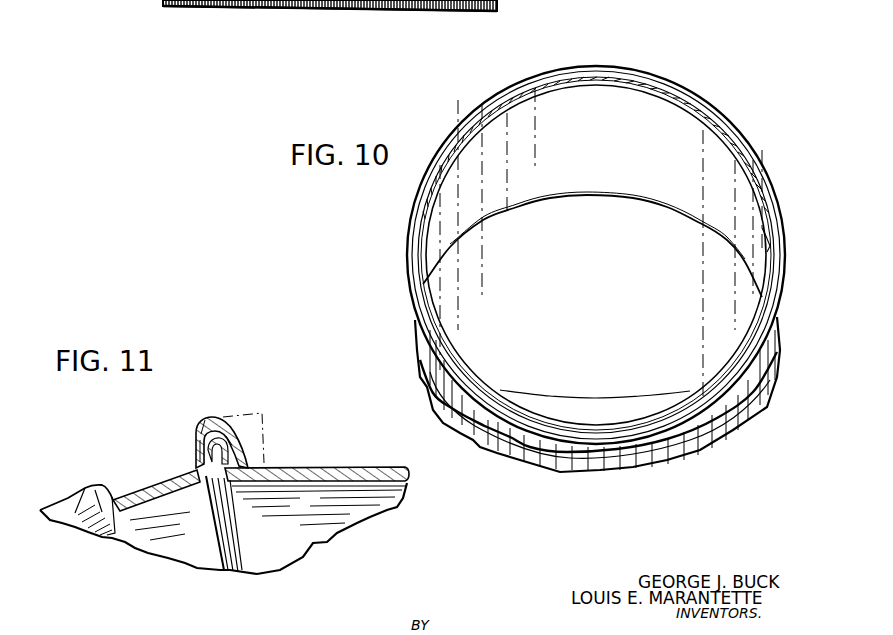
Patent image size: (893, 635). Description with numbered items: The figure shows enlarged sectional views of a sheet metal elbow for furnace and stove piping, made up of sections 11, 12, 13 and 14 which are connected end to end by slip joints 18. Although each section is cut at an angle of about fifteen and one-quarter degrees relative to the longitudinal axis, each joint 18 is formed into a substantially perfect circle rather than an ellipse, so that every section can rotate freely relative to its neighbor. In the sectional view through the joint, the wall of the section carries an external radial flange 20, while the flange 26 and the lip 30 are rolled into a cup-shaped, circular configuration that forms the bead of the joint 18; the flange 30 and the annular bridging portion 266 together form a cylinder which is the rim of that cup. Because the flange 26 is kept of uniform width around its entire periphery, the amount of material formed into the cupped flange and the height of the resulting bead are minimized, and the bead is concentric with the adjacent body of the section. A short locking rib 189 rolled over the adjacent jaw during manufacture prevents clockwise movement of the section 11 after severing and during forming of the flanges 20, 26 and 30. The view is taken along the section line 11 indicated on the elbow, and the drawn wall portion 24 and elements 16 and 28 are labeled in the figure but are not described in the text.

In FIG. 10, the section 11 is at (616, 45).
In FIG. 10, the section 12 is at (553, 402).
In FIG. 10, the section 13 is at (465, 318).
In FIG. 11, the section 13 is at (135, 481).
In FIG. 10, the section 14 is at (462, 124).
In FIG. 11, the section 14 is at (334, 466).
In FIG. 10, the inner chime ring 16 is at (773, 240).
In FIG. 11, the slip joint 18 is at (218, 424).
In FIG. 11, the external radial flange 20 is at (210, 455).
In FIG. 11, the drum wall section 24 is at (170, 490).
In FIG. 11, the flange 26 is at (182, 435).
In FIG. 11, the annular bridging portion 266 is at (211, 430).
In FIG. 11, the bead extension 28 is at (255, 412).
In FIG. 11, the lip 30 is at (236, 451).
In FIG. 11, the locking rib 189 is at (92, 483).